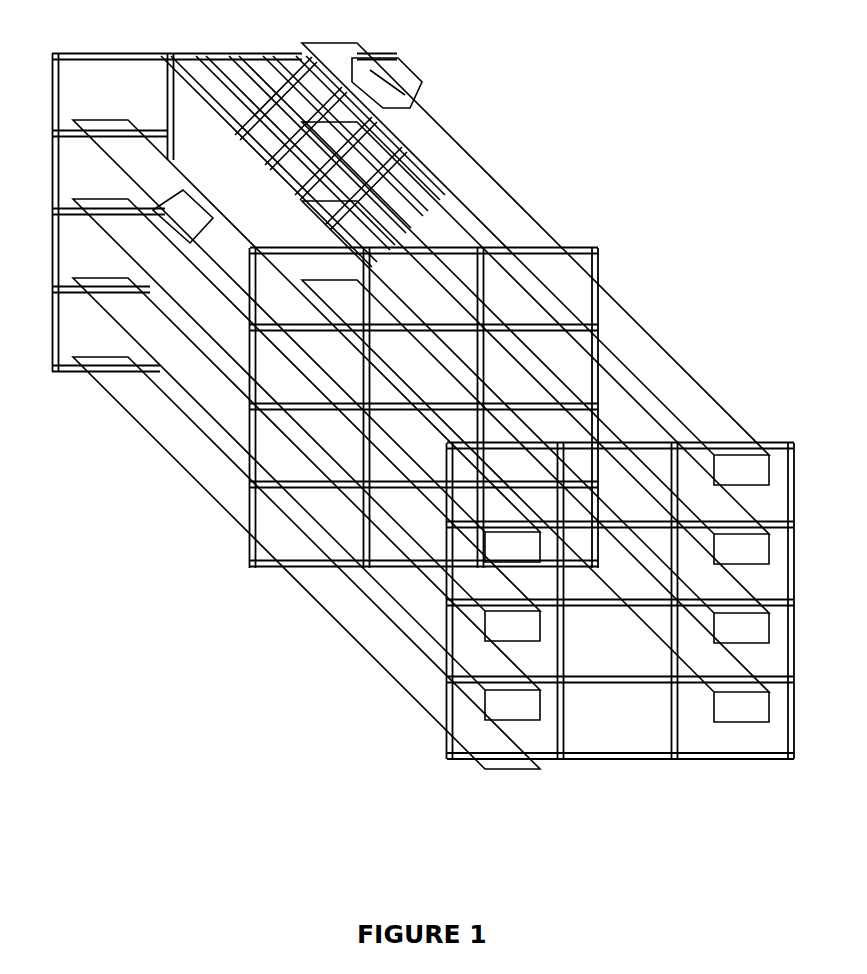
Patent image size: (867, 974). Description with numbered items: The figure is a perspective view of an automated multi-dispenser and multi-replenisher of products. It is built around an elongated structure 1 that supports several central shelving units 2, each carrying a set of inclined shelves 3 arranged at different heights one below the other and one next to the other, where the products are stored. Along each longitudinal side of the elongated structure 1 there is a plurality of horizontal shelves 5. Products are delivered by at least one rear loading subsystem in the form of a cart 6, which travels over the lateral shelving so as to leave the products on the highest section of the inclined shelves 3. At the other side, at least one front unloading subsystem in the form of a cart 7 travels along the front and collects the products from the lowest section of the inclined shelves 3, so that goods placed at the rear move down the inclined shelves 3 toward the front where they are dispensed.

The elongated structure 1 is at (235, 43).
The central shelving units 2 is at (611, 362).
The inclined shelves 3 is at (241, 83).
The horizontal shelves 5 is at (466, 719).
The rear loading subsystem cart 6 is at (442, 97).
The front unloading subsystem cart 7 is at (151, 228).